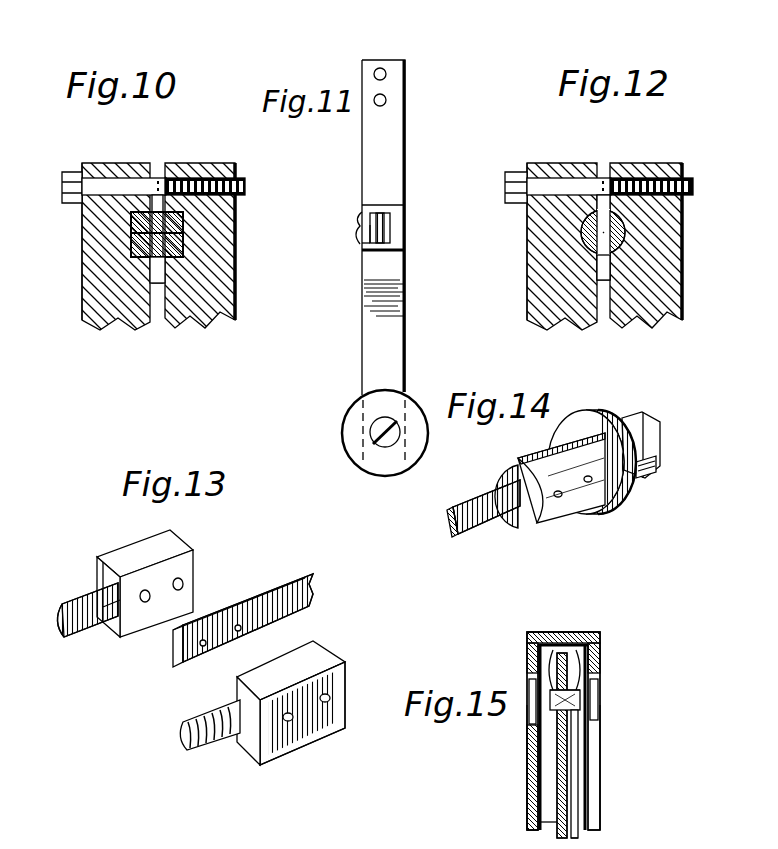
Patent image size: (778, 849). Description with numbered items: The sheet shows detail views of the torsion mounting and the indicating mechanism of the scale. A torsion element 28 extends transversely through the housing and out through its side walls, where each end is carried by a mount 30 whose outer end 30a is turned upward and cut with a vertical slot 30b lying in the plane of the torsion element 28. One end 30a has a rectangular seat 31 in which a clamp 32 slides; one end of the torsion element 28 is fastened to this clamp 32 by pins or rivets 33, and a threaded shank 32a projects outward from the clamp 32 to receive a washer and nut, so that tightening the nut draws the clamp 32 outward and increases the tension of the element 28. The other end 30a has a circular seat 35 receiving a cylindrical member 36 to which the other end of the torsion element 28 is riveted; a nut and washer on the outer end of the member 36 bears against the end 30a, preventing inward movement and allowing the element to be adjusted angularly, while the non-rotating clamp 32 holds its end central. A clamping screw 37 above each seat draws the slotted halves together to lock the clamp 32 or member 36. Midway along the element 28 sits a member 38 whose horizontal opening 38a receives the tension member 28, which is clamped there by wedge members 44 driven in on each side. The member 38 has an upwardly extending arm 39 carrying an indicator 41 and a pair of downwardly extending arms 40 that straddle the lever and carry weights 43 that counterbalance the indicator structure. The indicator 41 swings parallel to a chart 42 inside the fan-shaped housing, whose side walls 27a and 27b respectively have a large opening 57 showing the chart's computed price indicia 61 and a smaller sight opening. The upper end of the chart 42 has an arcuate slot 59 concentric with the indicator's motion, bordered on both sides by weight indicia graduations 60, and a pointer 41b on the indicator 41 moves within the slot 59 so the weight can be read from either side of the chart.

In FIG. 15, the side wall 27a is at (609, 804).
In FIG. 15, the side wall 27b is at (518, 801).
In FIG. 10, the torsion element 28 is at (184, 246).
In FIG. 11, the torsion element 28 is at (392, 238).
In FIG. 12, the torsion element 28 is at (624, 230).
In FIG. 13, the torsion element 28 is at (292, 580).
In FIG. 14, the torsion element 28 is at (481, 532).
In FIG. 10, the mount 30 is at (176, 338).
In FIG. 12, the mount 30 is at (621, 332).
In FIG. 10, the upwardly presented end 30a is at (95, 320).
In FIG. 12, the upwardly presented end 30a is at (566, 322).
In FIG. 10, the vertical slot 30b is at (165, 278).
In FIG. 12, the vertical slot 30b is at (612, 278).
In FIG. 10, the seat 31 is at (129, 225).
In FIG. 10, the clamp 32 is at (184, 215).
In FIG. 13, the clamp 32 is at (123, 556).
In FIG. 13, the threaded shank 32a is at (182, 735).
In FIG. 10, the pins or rivets 33 is at (129, 251).
In FIG. 12, the seat 35 is at (582, 256).
In FIG. 12, the cylindrical member 36 is at (622, 246).
In FIG. 14, the cylindrical member 36 is at (600, 522).
In FIG. 10, the clamping screw 37 is at (110, 186).
In FIG. 12, the clamping screw 37 is at (556, 187).
In FIG. 14, the clamping screw 37 is at (578, 514).
In FIG. 11, the member 38 is at (400, 208).
In FIG. 14, the member 38 is at (642, 440).
In FIG. 11, the horizontally disposed opening 38a is at (370, 241).
In FIG. 11, the upwardly extending arm 39 is at (392, 137).
In FIG. 11, the downwardly extending arms 40 is at (372, 328).
In FIG. 15, the indicator 41 is at (577, 776).
In FIG. 15, the pointer 41b is at (579, 700).
In FIG. 15, the chart 42 is at (556, 813).
In FIG. 11, the weights 43 is at (350, 412).
In FIG. 11, the wedge members 44 is at (362, 216).
In FIG. 15, the wedge members 44 is at (639, 841).
In FIG. 15, the large opening 57 is at (592, 742).
In FIG. 15, the arcuate slot 59 is at (574, 690).
In FIG. 15, the weight indicia graduations 60 is at (582, 632).
In FIG. 15, the indicia 61 is at (571, 762).